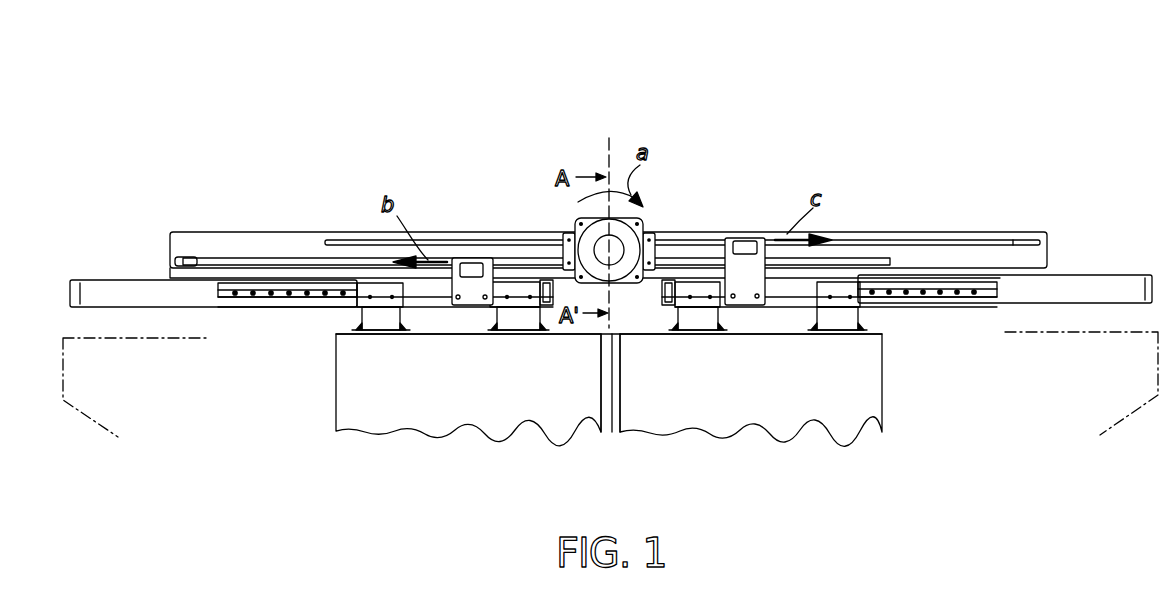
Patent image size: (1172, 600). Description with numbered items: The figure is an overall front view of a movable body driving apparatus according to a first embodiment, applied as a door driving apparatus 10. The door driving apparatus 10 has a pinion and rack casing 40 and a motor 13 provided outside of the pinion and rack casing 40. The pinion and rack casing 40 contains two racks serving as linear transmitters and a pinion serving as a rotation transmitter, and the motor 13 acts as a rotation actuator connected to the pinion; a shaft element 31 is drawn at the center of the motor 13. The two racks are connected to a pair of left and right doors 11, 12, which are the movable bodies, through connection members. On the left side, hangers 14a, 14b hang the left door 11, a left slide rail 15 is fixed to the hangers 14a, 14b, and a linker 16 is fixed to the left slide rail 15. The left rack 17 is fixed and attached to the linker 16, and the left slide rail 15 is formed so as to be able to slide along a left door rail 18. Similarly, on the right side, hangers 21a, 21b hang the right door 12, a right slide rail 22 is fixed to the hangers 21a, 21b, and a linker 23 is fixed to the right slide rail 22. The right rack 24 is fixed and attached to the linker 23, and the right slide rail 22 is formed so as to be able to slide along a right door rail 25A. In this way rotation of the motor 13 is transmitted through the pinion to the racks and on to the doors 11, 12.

The door driving apparatus 10 is at (609, 111).
The left door 11 is at (433, 420).
The right door 12 is at (713, 425).
The motor 13 is at (641, 233).
The hanger 14a is at (387, 322).
The hanger 14b is at (525, 322).
The left slide rail 15 is at (243, 285).
The linker 16 is at (455, 262).
The left rack 17 is at (507, 262).
The left door rail 18 is at (110, 302).
The hanger 21a is at (697, 322).
The hanger 21b is at (832, 322).
The right slide rail 22 is at (940, 283).
The linker 23 is at (744, 248).
The right rack 24 is at (695, 236).
The right door rail 25A is at (1060, 293).
The rotary shaft 31 is at (597, 247).
The pinion and rack casing 40 is at (1049, 247).